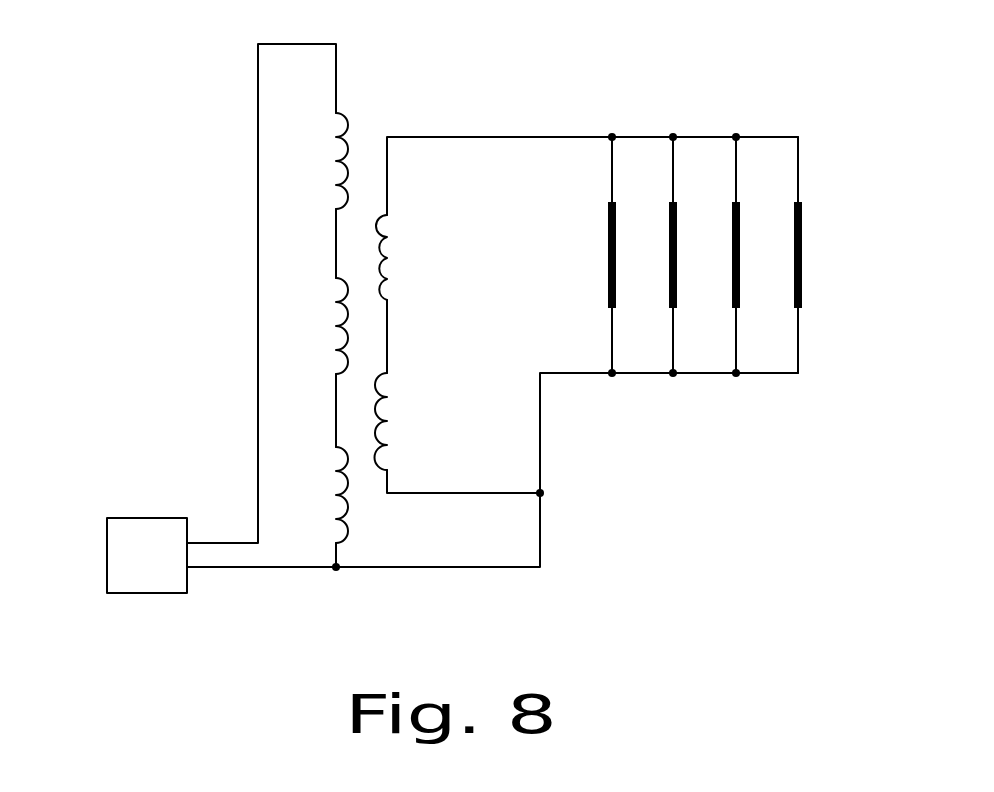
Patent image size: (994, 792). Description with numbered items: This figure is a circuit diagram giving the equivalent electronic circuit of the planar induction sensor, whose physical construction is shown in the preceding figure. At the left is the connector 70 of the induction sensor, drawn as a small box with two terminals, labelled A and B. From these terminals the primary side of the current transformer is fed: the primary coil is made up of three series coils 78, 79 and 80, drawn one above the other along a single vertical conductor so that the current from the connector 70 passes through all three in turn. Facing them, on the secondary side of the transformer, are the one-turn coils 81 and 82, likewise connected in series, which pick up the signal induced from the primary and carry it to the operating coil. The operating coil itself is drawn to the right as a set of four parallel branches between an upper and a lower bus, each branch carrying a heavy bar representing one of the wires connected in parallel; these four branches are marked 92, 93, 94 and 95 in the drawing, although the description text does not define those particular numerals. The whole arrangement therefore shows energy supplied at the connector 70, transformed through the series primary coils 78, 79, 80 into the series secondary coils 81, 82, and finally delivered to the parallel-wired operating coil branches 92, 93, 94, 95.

The connector 70 is at (133, 525).
The series coil 78 is at (345, 470).
The series coil 79 is at (345, 312).
The series coil 80 is at (345, 148).
The one-turn coil 81 is at (378, 380).
The one-turn coil 82 is at (383, 226).
The lamp 92 is at (607, 250).
The lamp 93 is at (665, 235).
The lamp 94 is at (740, 270).
The lamp 95 is at (805, 245).